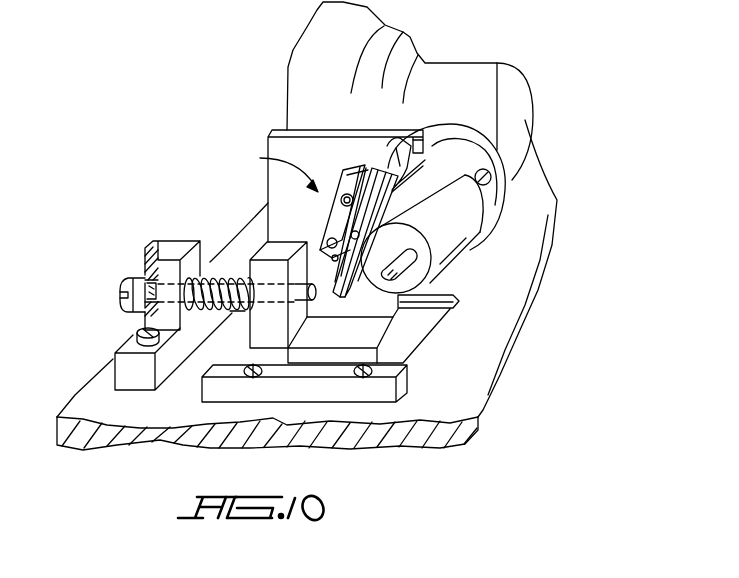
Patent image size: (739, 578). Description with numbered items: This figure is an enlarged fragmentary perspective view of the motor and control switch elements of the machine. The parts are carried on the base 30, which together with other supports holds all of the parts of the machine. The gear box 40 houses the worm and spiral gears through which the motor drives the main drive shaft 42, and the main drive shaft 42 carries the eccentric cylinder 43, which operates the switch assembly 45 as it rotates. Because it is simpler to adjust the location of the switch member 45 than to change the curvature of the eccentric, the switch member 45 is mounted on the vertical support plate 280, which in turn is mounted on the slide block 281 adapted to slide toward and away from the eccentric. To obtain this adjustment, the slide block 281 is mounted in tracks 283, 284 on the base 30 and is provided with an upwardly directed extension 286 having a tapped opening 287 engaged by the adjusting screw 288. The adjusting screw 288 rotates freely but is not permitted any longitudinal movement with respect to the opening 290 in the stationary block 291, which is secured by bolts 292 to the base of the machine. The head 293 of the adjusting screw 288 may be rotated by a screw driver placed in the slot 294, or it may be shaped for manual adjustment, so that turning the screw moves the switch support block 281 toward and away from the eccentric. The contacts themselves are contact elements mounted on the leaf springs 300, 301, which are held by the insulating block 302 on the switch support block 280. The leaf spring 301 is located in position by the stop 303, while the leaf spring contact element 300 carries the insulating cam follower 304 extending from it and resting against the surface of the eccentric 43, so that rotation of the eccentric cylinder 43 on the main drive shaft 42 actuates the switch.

The base 30 is at (473, 393).
The gear box 40 is at (513, 90).
The main drive shaft 42 is at (395, 265).
The eccentric cylinder 43 is at (455, 247).
The switch assembly 45 is at (275, 169).
The vertical support plate 280 is at (331, 224).
The slide block 281 is at (326, 150).
The track 283 is at (407, 371).
The track 284 is at (455, 300).
The upwardly directed extension 286 is at (272, 292).
The tapped opening 287 is at (247, 272).
The adjusting screw 288 is at (237, 311).
The opening 290 is at (148, 262).
The stationary block 291 is at (165, 243).
The bolts 292 is at (135, 338).
The head 293 is at (118, 288).
The slot 294 is at (119, 297).
The leaf spring 300 is at (362, 182).
The leaf spring 301 is at (384, 152).
The insulating block 302 is at (351, 283).
The stop 303 is at (407, 148).
The insulating cam follower 304 is at (425, 142).